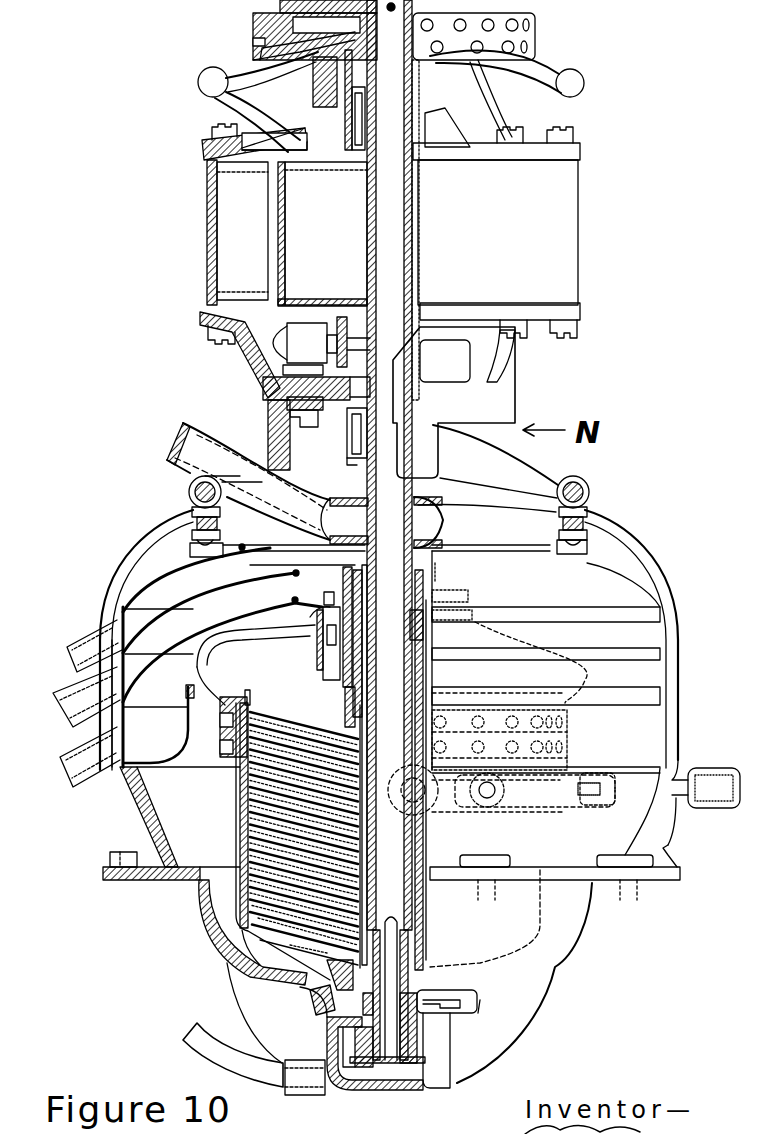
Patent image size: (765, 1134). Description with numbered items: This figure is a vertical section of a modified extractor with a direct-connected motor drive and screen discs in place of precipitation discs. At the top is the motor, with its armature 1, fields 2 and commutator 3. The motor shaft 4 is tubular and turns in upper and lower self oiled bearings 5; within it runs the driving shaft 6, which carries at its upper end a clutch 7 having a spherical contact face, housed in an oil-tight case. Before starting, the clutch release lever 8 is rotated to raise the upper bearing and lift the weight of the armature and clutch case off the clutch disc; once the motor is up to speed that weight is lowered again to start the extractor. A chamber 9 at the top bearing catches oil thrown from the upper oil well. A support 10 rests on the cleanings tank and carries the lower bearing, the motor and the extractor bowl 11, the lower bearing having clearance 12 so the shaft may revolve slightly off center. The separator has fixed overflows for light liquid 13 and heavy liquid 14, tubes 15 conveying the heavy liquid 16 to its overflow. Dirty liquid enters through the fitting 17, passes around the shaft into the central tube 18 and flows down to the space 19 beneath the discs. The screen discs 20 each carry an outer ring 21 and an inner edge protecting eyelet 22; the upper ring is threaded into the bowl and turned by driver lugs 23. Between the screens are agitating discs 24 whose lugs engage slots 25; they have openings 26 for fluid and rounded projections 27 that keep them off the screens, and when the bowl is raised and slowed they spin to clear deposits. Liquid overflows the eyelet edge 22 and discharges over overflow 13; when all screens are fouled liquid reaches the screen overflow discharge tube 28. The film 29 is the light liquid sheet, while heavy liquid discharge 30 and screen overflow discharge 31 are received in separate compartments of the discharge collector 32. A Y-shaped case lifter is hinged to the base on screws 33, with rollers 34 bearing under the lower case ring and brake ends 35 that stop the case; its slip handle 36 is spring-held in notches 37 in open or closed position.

The motor armature 1 is at (322, 234).
The fields 2 is at (237, 232).
The commutator 3 is at (340, 348).
The motor shaft 4 is at (413, 222).
The self oiled bearings 5 is at (368, 128).
The driving shaft 6 is at (395, 278).
The clutch 7 is at (468, 14).
The clutch release lever 8 is at (576, 95).
The chamber 9 is at (318, 85).
The support 10 is at (155, 880).
The extractor bowl 11 is at (242, 812).
The clearance 12 is at (352, 1078).
The overflow for light liquid 13 is at (325, 690).
The overflow for heavy liquid 14 is at (336, 600).
The tubes 15 is at (300, 650).
The heavy liquid 16 is at (215, 695).
The fitting 17 is at (290, 492).
The central tube 18 is at (365, 695).
The space 19 is at (309, 952).
The screen discs 20 is at (275, 728).
The ring 21 is at (242, 847).
The edge protecting eyelet 22 is at (360, 882).
The driver lugs 23 is at (260, 700).
The agitating discs 24 is at (305, 735).
The slots 25 is at (356, 823).
The openings 26 is at (273, 933).
The rounded projections 27 is at (223, 963).
The screen overflow discharge tube 28 is at (363, 716).
The film 29 is at (270, 596).
The heavy liquid discharge 30 is at (292, 616).
The screen overflow discharge 31 is at (250, 573).
The discharge collector 32 is at (545, 756).
The screws 33 is at (487, 795).
The rollers 34 is at (412, 815).
The brake ends 35 is at (368, 770).
The slip handle 36 is at (700, 805).
The notches 37 is at (672, 845).